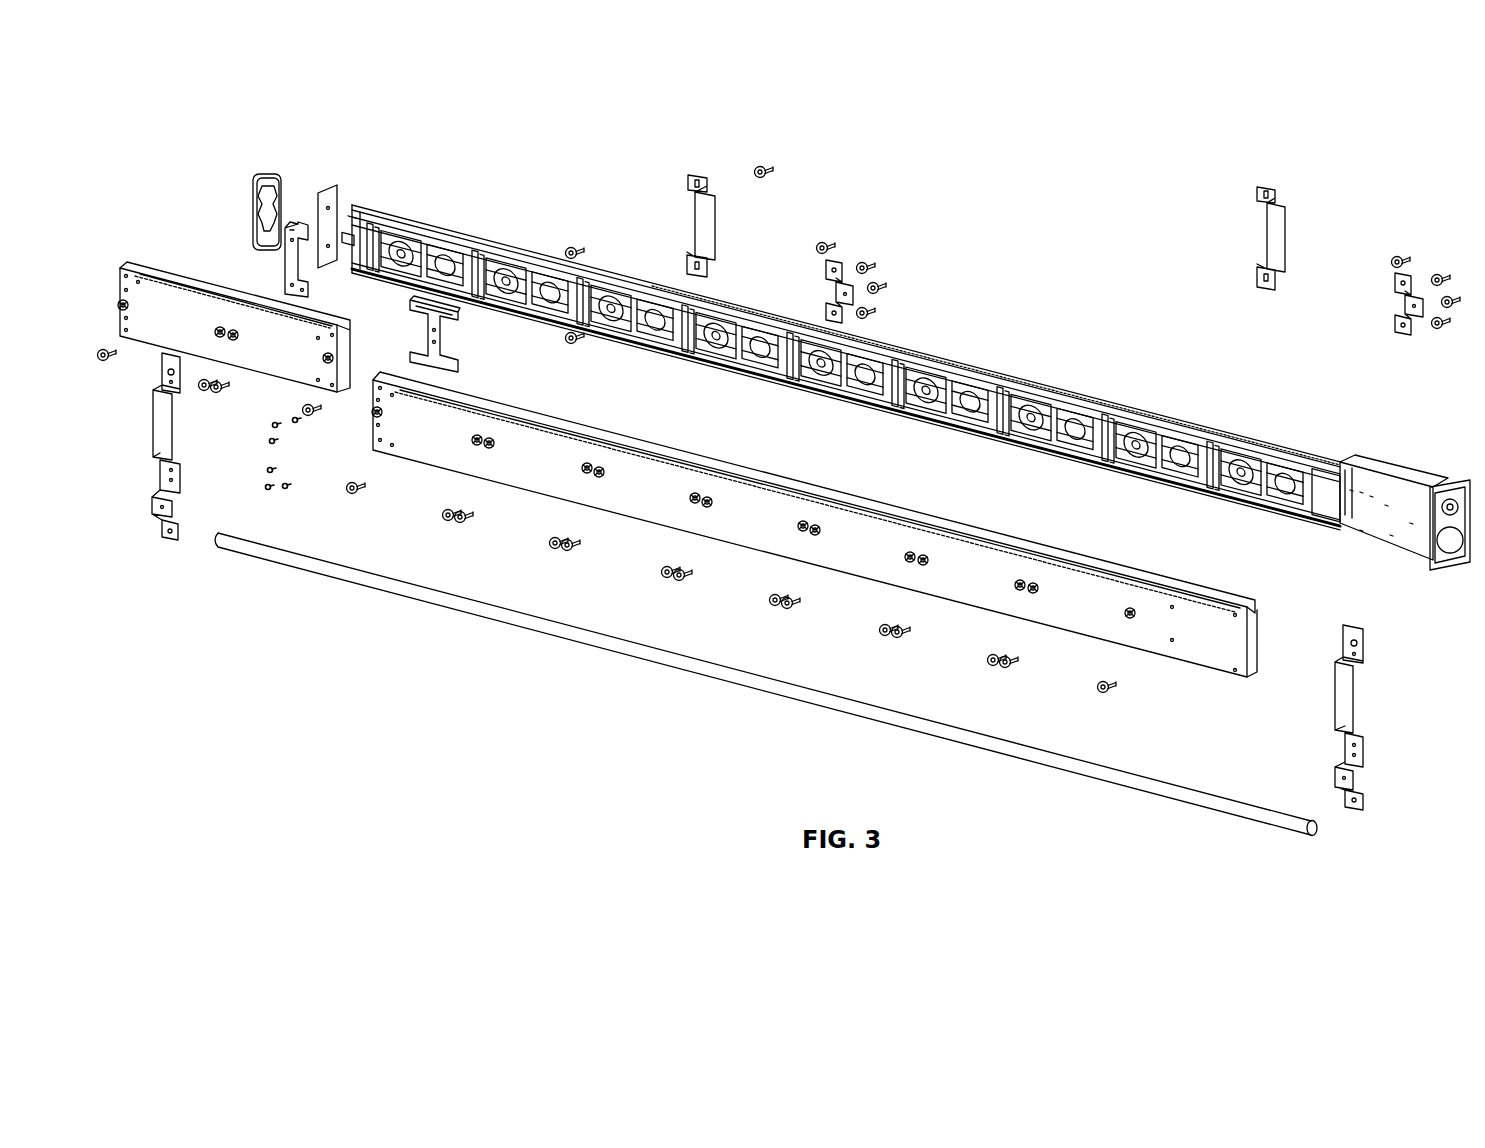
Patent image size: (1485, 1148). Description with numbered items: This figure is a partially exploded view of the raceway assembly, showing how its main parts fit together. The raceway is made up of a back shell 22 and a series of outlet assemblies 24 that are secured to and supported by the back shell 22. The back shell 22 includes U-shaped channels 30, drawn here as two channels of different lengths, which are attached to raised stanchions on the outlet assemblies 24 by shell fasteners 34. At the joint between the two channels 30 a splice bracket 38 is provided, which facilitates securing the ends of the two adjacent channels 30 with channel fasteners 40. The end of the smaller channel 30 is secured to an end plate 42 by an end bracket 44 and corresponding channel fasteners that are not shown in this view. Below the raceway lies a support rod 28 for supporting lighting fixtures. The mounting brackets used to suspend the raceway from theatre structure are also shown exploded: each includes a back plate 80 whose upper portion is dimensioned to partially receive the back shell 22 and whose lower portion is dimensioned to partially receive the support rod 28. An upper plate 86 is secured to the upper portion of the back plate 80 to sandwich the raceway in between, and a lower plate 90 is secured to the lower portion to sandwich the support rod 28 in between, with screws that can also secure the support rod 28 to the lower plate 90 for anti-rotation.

The back shell 22 is at (1183, 592).
The outlet assemblies 24 is at (1098, 393).
The support rod 28 is at (553, 628).
The U-shaped channels 30 is at (293, 362).
The shell fasteners 34 is at (679, 583).
The splice bracket 38 is at (447, 347).
The channel fasteners 40 is at (270, 492).
The end plate 42 is at (338, 186).
The end bracket 44 is at (283, 283).
The back plate 80 is at (157, 520).
The upper plate 86 is at (690, 190).
The lower plate 90 is at (826, 267).